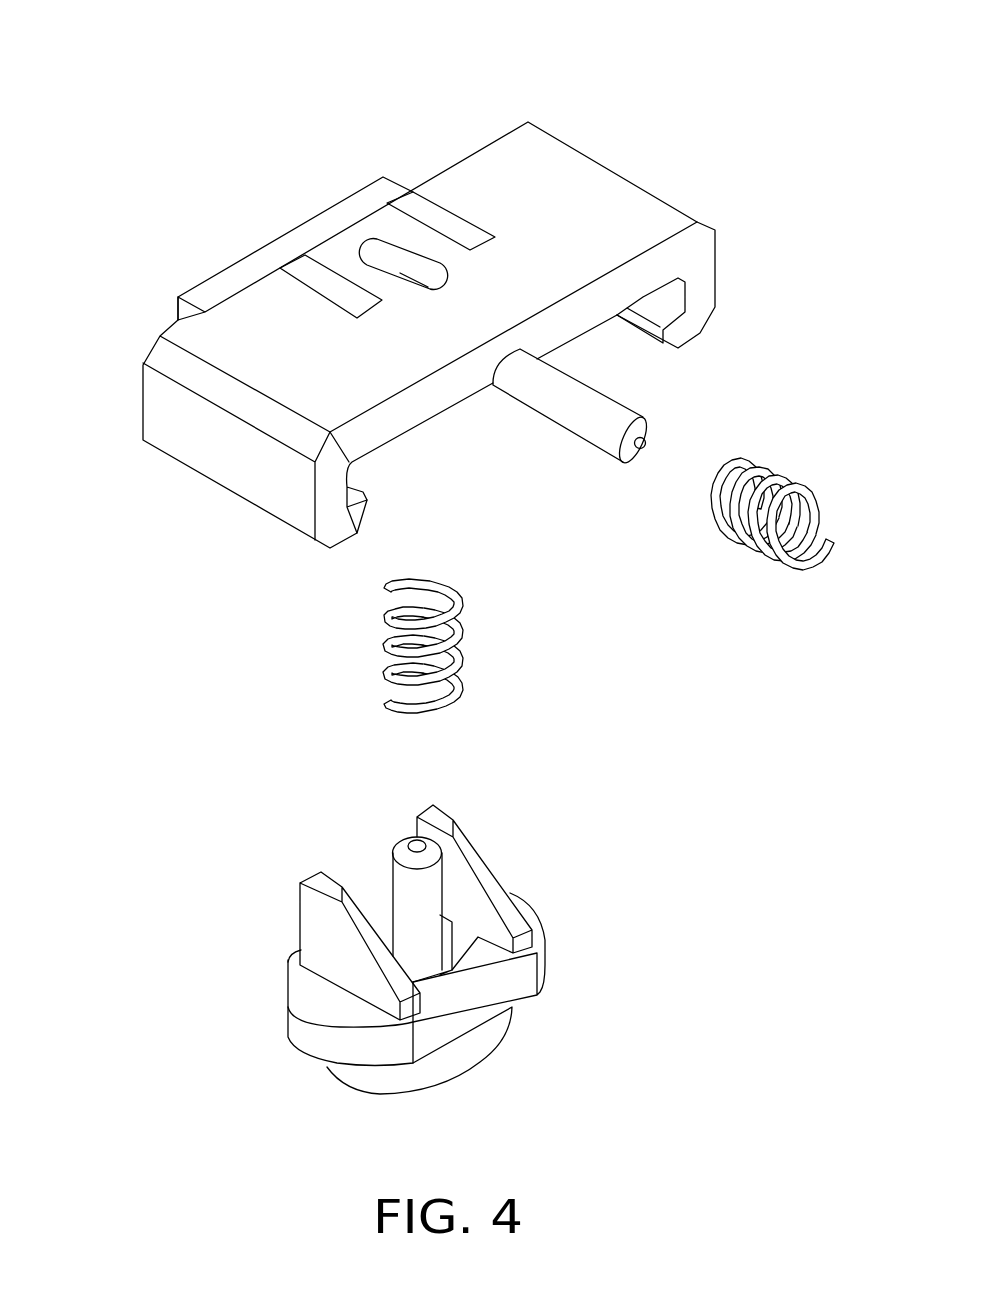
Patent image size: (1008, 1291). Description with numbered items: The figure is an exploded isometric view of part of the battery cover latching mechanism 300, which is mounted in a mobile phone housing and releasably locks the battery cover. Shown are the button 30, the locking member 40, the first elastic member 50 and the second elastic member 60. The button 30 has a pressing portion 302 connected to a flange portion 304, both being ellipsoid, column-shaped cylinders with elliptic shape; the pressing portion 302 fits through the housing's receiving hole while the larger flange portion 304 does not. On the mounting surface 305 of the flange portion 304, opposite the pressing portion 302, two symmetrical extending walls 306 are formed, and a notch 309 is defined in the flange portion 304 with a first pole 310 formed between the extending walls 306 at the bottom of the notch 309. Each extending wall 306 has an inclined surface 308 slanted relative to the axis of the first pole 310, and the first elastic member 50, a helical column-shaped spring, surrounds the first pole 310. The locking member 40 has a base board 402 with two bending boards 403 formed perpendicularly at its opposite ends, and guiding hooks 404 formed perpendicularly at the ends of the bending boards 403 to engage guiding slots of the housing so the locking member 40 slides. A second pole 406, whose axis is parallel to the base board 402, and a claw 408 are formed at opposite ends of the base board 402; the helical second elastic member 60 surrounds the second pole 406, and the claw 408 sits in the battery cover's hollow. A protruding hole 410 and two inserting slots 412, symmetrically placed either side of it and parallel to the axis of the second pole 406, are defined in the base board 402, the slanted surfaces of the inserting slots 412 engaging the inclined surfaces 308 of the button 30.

The battery cover latching mechanism 300 is at (517, 34).
The button 30 is at (560, 905).
The locking member 40 is at (645, 166).
The first elastic member 50 is at (387, 600).
The second elastic member 60 is at (817, 553).
The pressing portion 302 is at (430, 1065).
The flange portion 304 is at (320, 1038).
The mounting surface 305 is at (308, 990).
The extending walls 306 is at (325, 913).
The inclined surface 308 is at (478, 855).
The notch 309 is at (452, 953).
The first pole 310 is at (405, 857).
The base board 402 is at (508, 175).
The bending boards 403 is at (698, 268).
The guiding hooks 404 is at (660, 317).
The second pole 406 is at (593, 413).
The claw 408 is at (220, 287).
The protruding hole 410 is at (385, 250).
The inserting slots 412 is at (313, 277).